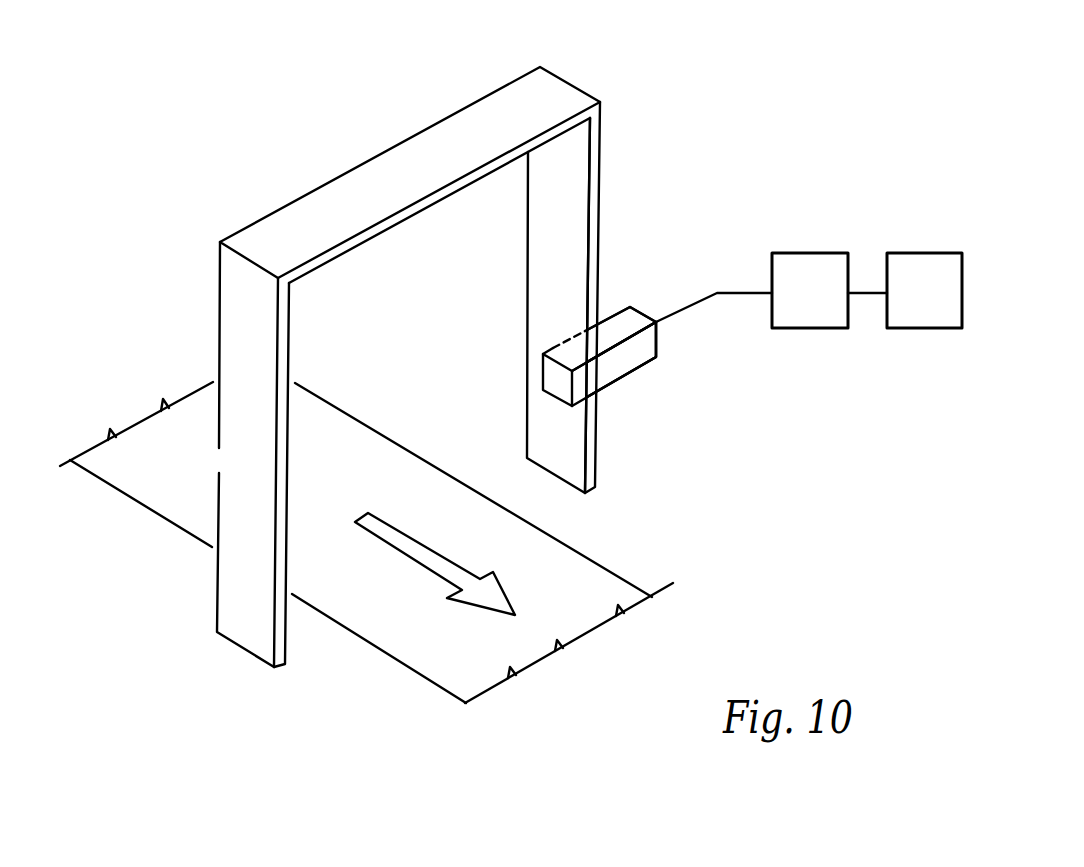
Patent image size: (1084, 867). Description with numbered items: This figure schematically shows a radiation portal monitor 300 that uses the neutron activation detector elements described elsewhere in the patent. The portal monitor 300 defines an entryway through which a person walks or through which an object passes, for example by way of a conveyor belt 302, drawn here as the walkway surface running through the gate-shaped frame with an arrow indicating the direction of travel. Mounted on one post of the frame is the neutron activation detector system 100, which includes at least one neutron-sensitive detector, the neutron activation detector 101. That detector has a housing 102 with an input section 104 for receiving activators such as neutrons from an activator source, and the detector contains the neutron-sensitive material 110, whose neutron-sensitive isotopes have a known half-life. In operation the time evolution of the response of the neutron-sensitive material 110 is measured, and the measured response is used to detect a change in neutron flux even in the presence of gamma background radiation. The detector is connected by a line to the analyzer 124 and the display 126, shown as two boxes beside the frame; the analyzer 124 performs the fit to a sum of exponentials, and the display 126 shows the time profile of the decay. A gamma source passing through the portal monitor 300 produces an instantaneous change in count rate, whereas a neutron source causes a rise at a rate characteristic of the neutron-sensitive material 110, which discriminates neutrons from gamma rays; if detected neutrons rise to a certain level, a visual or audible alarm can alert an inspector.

The neutron activation detector system 100 is at (637, 353).
The neutron activation detector 101 is at (623, 398).
The housing 102 is at (618, 308).
The input section 104 is at (614, 370).
The neutron-sensitive material 110 is at (550, 378).
The analyzer 124 is at (828, 307).
The display 126 is at (943, 307).
The portal monitor 300 is at (158, 615).
The conveyor belt 302 is at (598, 560).